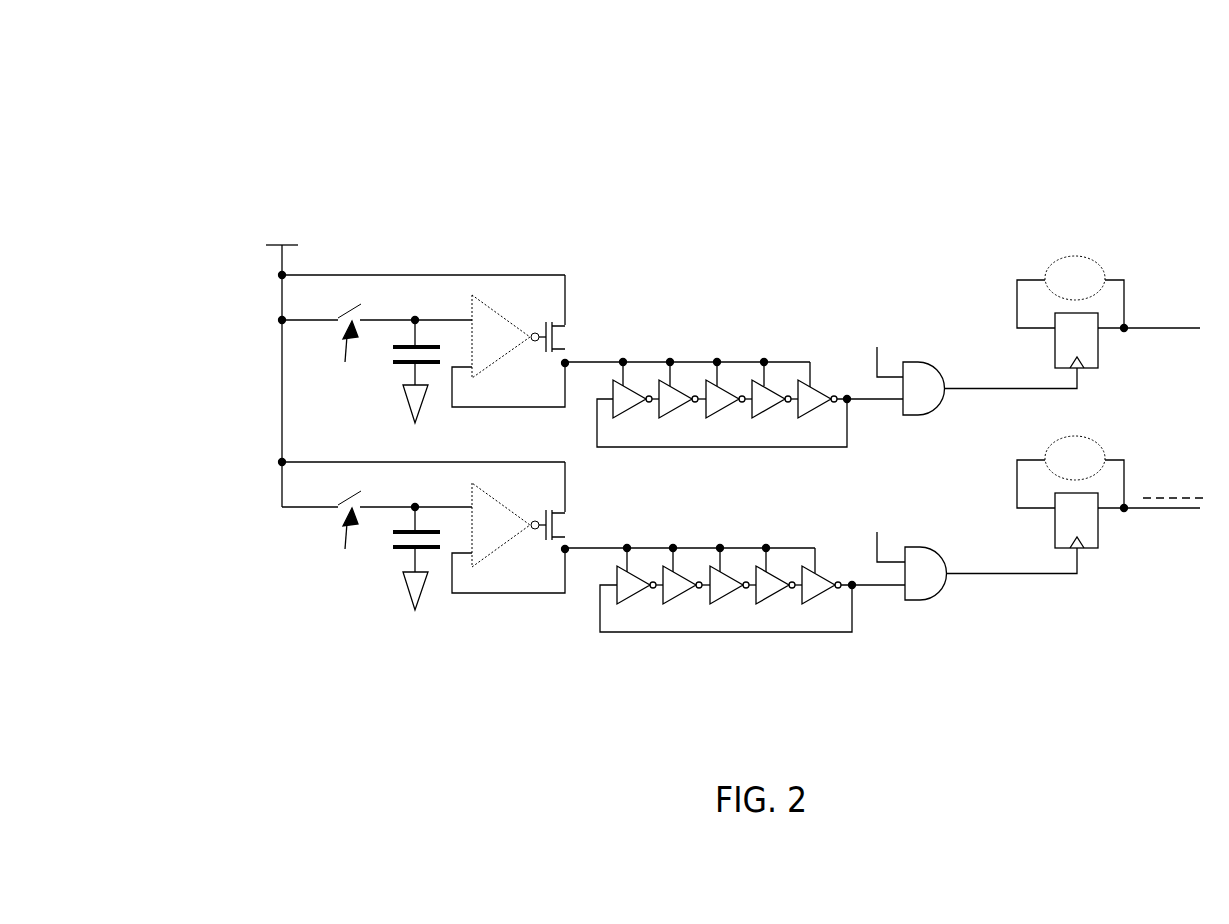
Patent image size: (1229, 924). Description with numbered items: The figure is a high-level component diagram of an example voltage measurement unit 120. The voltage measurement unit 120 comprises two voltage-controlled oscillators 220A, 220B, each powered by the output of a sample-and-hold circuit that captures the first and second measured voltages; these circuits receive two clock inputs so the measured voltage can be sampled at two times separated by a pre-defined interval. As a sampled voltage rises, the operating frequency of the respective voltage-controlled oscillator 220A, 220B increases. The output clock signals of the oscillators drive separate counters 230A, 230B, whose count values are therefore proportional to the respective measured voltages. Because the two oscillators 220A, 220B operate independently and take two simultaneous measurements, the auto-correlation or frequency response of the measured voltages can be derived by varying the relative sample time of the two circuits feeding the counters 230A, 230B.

The voltage measurement unit 120 is at (435, 108).
The voltage-controlled oscillator 220A is at (734, 377).
The voltage-controlled oscillator 220B is at (735, 560).
The counter 230A is at (1122, 312).
The counter 230B is at (1120, 492).